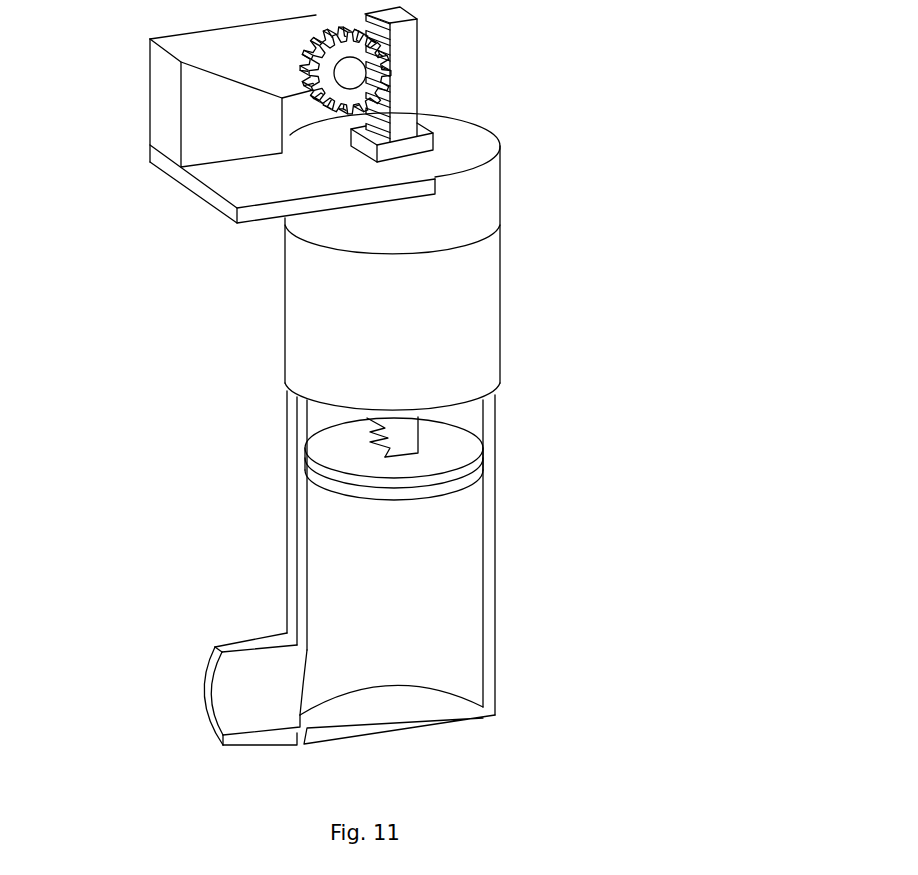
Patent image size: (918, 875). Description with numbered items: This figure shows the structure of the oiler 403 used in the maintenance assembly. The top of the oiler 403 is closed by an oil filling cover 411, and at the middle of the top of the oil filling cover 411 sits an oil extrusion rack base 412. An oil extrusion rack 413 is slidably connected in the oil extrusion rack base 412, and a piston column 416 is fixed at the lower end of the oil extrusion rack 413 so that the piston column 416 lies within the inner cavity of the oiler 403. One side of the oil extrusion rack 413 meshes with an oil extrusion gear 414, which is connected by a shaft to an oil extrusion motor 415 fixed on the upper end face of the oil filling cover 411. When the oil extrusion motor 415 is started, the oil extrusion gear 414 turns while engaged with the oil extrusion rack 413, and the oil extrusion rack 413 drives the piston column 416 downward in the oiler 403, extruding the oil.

The oiler 403 is at (433, 568).
The oil filling cover 411 is at (482, 261).
The oil extrusion rack base 412 is at (469, 107).
The oil extrusion rack 413 is at (476, 71).
The oil extrusion gear 414 is at (206, 174).
The oil extrusion motor 415 is at (233, 119).
The piston column 416 is at (476, 436).